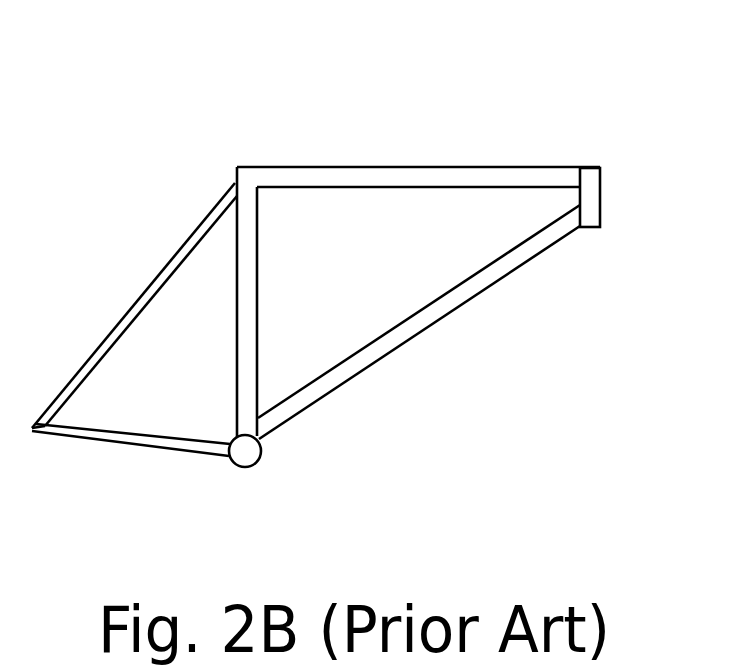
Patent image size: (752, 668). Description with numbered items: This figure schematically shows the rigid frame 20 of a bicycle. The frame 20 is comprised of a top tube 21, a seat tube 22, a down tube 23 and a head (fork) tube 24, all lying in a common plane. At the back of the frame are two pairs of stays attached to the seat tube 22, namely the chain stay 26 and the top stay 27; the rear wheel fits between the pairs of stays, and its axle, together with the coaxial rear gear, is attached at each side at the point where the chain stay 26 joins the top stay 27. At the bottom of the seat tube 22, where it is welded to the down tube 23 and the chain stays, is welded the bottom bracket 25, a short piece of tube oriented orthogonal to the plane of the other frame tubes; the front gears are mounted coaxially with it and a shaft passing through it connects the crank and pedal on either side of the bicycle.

The rigid frame 20 is at (458, 113).
The top tube 21 is at (335, 167).
The seat tube 22 is at (242, 335).
The down tube 23 is at (502, 275).
The head (fork) tube 24 is at (600, 192).
The bottom bracket 25 is at (247, 463).
The chain stay 26 is at (98, 440).
The top stay 27 is at (118, 325).